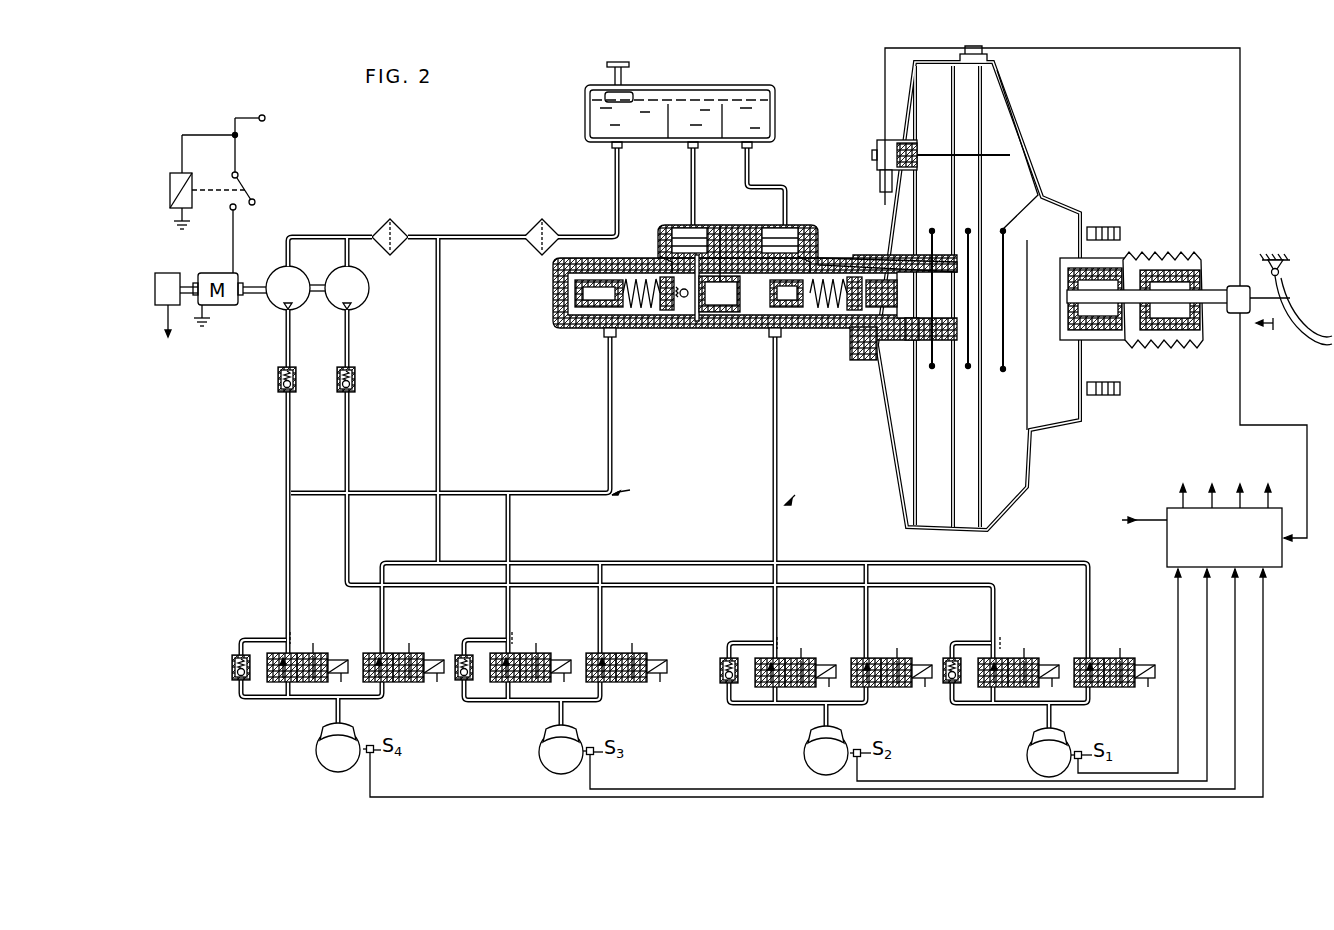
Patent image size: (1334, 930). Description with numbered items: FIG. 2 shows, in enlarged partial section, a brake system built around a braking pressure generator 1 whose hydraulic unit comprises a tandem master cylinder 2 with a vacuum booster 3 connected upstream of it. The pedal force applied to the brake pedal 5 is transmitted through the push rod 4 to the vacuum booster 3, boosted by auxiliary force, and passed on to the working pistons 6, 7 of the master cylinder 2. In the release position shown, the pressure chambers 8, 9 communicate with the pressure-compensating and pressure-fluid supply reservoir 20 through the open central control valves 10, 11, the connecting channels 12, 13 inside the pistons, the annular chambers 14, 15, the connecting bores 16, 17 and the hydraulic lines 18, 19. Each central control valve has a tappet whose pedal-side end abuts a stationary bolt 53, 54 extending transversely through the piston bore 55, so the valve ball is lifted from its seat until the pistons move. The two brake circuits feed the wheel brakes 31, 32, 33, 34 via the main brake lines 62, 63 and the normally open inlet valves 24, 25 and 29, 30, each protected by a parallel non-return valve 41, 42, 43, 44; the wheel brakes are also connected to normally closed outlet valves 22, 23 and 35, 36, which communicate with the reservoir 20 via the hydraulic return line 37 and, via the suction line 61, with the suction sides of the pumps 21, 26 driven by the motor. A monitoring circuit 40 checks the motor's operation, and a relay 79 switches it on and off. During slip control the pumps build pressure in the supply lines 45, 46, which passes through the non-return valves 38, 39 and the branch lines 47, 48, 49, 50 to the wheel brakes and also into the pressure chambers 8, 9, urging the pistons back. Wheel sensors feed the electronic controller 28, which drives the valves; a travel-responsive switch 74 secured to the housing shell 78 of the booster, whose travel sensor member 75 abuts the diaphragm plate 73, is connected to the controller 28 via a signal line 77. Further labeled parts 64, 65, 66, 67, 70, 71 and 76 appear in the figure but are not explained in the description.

The braking pressure generator 1 is at (755, 281).
The tandem master cylinder 2 is at (644, 326).
The vacuum booster 3 is at (1028, 128).
The push rod 4 is at (1214, 306).
The brake pedal 5 is at (1318, 348).
The working piston 6 is at (952, 350).
The working piston 7 is at (752, 318).
The pressure chamber 8 is at (800, 312).
The pressure chamber 9 is at (630, 312).
The central control valve 10 is at (826, 312).
The central control valve 11 is at (668, 314).
The connecting channel 12 is at (855, 314).
The connecting channel 13 is at (696, 322).
The annular chamber 14 is at (878, 258).
The annular chamber 15 is at (730, 314).
The connecting bore 16 is at (853, 256).
The connecting bore 17 is at (662, 258).
The hydraulic line 18 is at (745, 182).
The hydraulic line 19 is at (690, 182).
The pressure-compensating and pressure-fluid supply reservoir 20 is at (590, 116).
The pump 21 is at (301, 280).
The outlet valve 22 is at (1096, 658).
The outlet valve 23 is at (880, 658).
The inlet valve 24 is at (1008, 658).
The inlet valve 25 is at (790, 658).
The pump 26 is at (362, 283).
The electronic controller 28 is at (1168, 533).
The inlet valve 29 is at (522, 653).
The inlet valve 30 is at (300, 653).
The wheel brake 31 is at (1036, 739).
The wheel brake 32 is at (814, 737).
The wheel brake 33 is at (549, 735).
The wheel brake 34 is at (326, 735).
The outlet valve 35 is at (614, 653).
The outlet valve 36 is at (395, 653).
The hydraulic return line 37 is at (441, 378).
The non-return valve 38 is at (356, 380).
The non-return valve 39 is at (277, 380).
The monitoring circuit 40 is at (168, 273).
The non-return valve 41 is at (948, 657).
The non-return valve 42 is at (724, 657).
The non-return valve 43 is at (460, 654).
The non-return valve 44 is at (236, 654).
The supply line 45 is at (351, 331).
The supply line 46 is at (292, 331).
The branch line 47 is at (997, 614).
The branch line 48 is at (778, 616).
The branch line 49 is at (511, 615).
The branch line 50 is at (292, 603).
The stationary bolt 53 is at (870, 360).
The stationary bolt 54 is at (718, 306).
The piston bore 55 is at (804, 234).
The suction line 61 is at (371, 232).
The main brake line 62 is at (779, 428).
The main brake line 63 is at (614, 428).
The return line 64 is at (966, 706).
The return line 65 is at (744, 706).
The return line 66 is at (474, 703).
The return line 67 is at (262, 700).
The seal 70 is at (913, 342).
The valve stem 71 is at (720, 226).
The diaphragm plate 73 is at (1022, 180).
The travel-responsive switch 74 is at (878, 145).
The travel sensor member 75 is at (945, 157).
The sensor contact 76 is at (910, 146).
The signal line 77 is at (1240, 166).
The housing shell 78 is at (880, 185).
The relay 79 is at (258, 183).